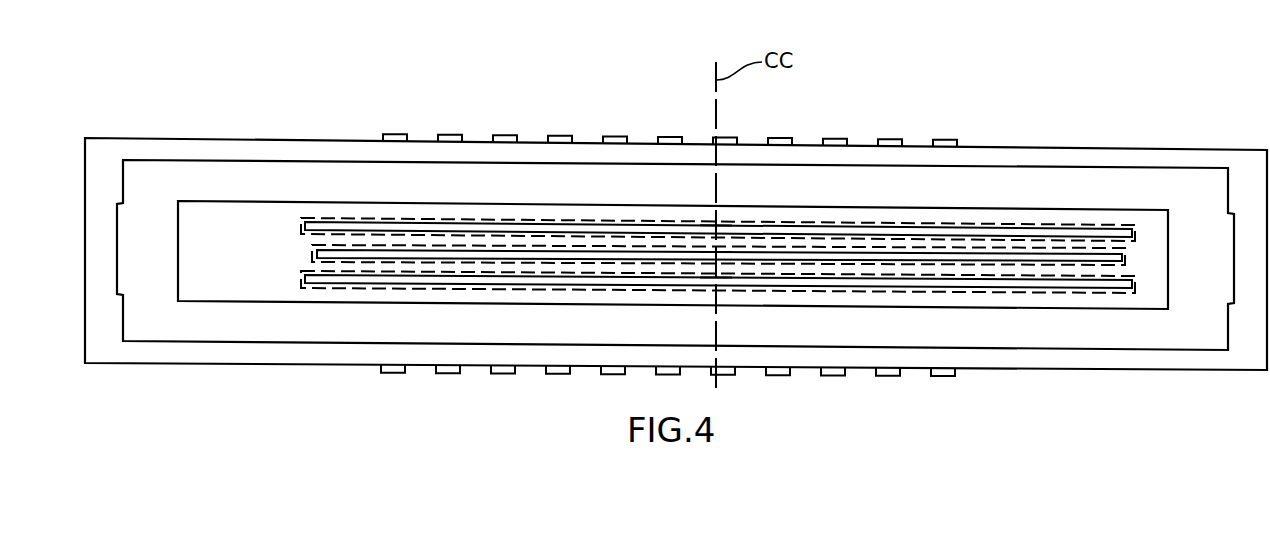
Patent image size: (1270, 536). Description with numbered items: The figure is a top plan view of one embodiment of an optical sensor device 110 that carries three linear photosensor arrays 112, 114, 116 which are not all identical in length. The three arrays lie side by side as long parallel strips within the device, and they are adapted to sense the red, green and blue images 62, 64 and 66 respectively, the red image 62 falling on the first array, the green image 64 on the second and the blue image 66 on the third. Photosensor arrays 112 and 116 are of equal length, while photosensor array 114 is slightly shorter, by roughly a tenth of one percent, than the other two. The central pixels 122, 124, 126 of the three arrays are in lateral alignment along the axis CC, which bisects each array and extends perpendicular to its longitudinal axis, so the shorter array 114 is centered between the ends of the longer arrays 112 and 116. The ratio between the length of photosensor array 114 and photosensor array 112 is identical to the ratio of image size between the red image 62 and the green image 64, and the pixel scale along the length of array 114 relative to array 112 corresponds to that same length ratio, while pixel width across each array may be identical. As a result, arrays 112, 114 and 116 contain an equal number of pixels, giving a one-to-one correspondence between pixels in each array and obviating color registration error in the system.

The optical sensor device 110 is at (1181, 136).
The red image 62 is at (355, 218).
The green image 64 is at (318, 258).
The blue image 66 is at (362, 288).
The linear photosensor array 112 is at (1127, 231).
The linear photosensor array 114 is at (1122, 257).
The linear photosensor array 116 is at (1134, 283).
The central pixel 122 is at (715, 231).
The central pixel 124 is at (715, 257).
The central pixel 126 is at (715, 280).